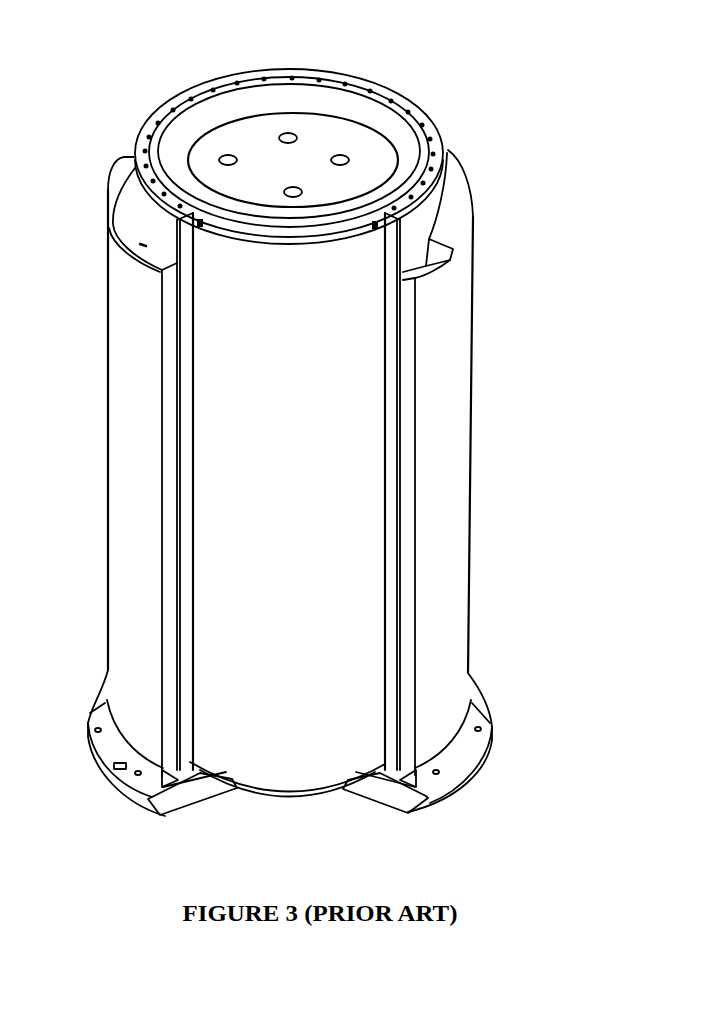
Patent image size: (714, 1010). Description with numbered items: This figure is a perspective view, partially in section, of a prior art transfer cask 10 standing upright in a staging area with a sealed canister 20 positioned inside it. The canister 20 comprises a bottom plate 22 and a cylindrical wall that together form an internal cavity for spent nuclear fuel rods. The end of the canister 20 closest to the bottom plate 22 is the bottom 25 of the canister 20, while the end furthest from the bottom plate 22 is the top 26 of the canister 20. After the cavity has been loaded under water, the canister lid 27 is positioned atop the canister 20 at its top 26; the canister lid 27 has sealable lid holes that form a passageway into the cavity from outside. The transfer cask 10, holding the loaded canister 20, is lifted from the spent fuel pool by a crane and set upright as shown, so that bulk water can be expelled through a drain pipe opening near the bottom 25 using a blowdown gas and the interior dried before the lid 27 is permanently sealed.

The transfer cask 10 is at (480, 340).
The canister 20 is at (225, 384).
The bottom plate 22 is at (229, 787).
The bottom of the canister 25 is at (334, 744).
The top of the canister 26 is at (246, 258).
The canister lid 27 is at (338, 137).